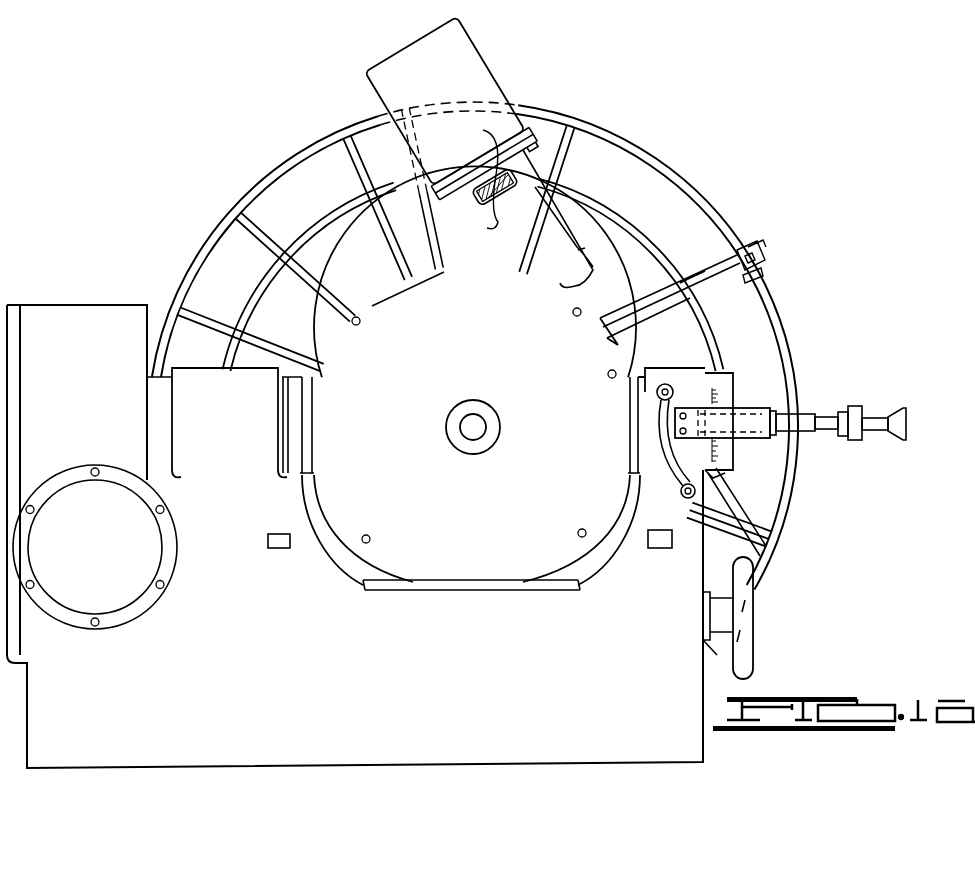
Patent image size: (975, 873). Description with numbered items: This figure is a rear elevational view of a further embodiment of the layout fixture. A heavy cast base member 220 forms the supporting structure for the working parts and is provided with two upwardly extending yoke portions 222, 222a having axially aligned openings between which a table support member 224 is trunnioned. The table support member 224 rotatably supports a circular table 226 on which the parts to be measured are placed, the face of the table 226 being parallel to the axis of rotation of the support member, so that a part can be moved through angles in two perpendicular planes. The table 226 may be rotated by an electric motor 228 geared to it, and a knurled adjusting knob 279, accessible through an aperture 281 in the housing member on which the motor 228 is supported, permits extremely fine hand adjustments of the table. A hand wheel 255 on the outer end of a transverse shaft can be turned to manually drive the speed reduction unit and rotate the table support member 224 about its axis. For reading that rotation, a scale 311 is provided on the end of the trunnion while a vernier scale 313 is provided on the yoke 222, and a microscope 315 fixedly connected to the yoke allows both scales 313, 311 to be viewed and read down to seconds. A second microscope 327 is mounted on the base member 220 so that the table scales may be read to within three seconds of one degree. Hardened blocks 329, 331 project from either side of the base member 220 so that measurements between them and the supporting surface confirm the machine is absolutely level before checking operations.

The base member 220 is at (636, 701).
The circular table 226 is at (676, 143).
The table support member 224 is at (500, 343).
The electric motor 228 is at (377, 94).
The knurled adjusting knob 279 is at (483, 134).
The aperture 281 is at (487, 228).
The microscope 327 is at (717, 275).
The yoke portion 222 is at (686, 346).
The yoke portion 222a is at (240, 410).
The scale 311 is at (730, 378).
The microscope 315 is at (805, 410).
The vernier scale 313 is at (715, 475).
The hardened block 329 is at (660, 548).
The hardened block 331 is at (280, 534).
The hand wheel 255 is at (750, 648).